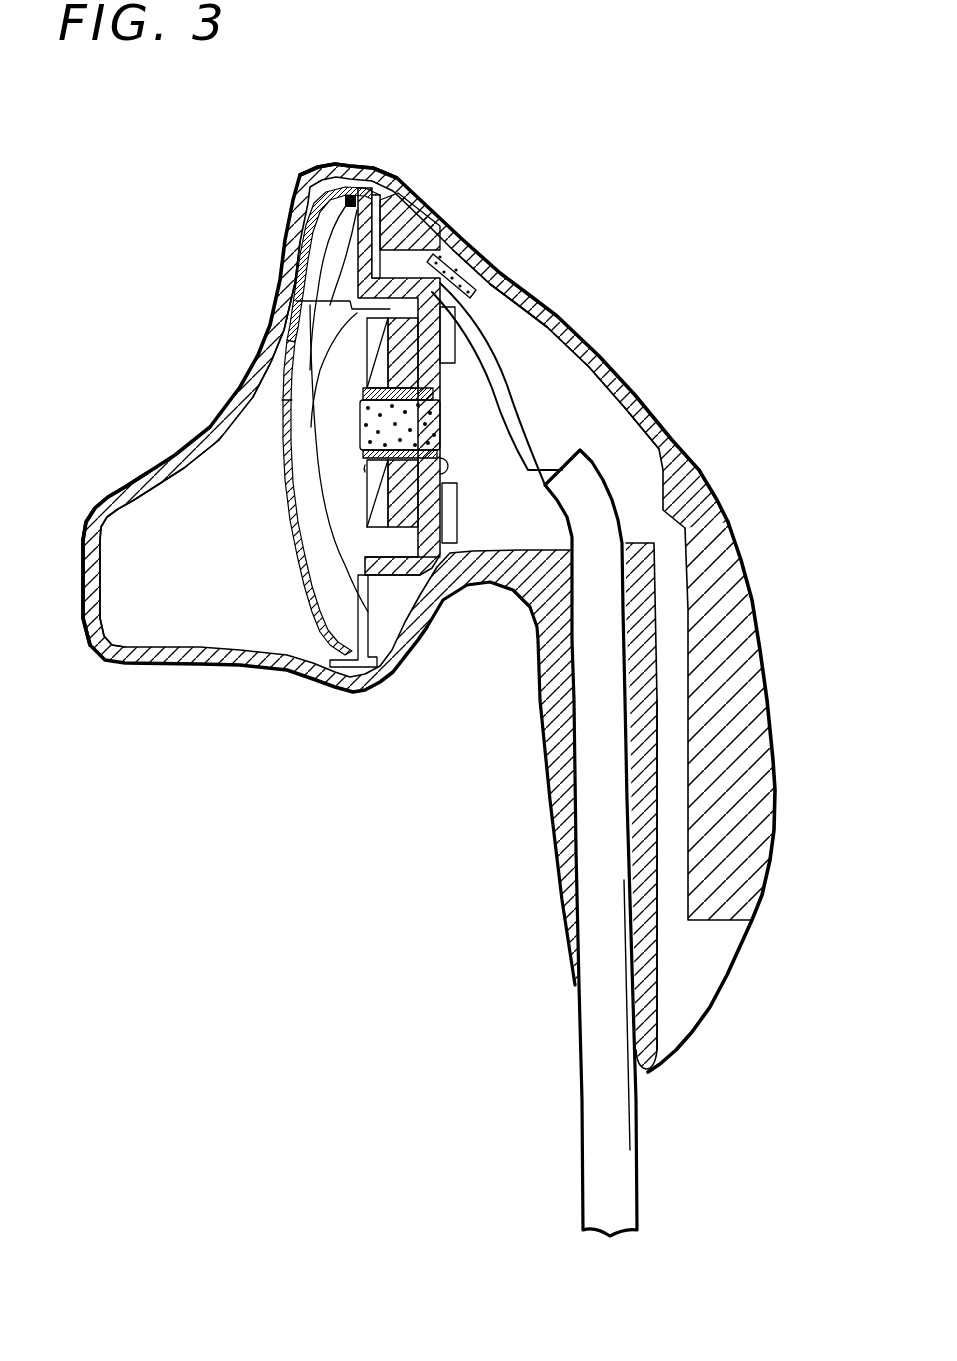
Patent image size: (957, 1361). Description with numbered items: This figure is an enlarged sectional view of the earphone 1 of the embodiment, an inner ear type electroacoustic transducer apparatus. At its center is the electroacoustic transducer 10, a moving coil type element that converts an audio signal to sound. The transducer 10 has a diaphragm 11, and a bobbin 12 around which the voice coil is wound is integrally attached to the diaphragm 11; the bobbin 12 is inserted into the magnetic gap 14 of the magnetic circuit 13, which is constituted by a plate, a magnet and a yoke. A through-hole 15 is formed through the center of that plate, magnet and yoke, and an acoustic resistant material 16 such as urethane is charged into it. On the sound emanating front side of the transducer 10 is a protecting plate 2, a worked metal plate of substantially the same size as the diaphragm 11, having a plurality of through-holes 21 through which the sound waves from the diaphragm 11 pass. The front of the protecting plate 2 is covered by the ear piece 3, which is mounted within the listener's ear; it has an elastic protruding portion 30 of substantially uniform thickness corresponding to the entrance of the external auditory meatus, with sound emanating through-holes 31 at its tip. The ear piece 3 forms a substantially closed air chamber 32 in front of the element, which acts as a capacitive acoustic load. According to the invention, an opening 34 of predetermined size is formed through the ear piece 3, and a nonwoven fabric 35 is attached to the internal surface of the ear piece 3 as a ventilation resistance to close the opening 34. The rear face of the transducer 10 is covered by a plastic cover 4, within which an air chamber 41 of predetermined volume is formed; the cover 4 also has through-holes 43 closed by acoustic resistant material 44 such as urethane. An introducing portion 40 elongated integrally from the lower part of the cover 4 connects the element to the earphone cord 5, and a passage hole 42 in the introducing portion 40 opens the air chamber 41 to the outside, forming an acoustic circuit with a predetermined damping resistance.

The earphone 1 is at (412, 153).
The protecting plate 2 is at (313, 542).
The ear piece 3 is at (116, 712).
The cover 4 is at (786, 529).
The earphone cord 5 is at (597, 1080).
The electroacoustic transducer 10 is at (460, 393).
The diaphragm 11 is at (315, 503).
The bobbin 12 is at (297, 338).
The magnetic circuit 13 is at (403, 350).
The magnetic gap 14 is at (400, 563).
The through-hole 15 is at (432, 424).
The acoustic resistant material 16 is at (443, 424).
The through-holes 21 is at (315, 597).
The protruding portion 30 is at (97, 507).
The sound emanating through-holes 31 is at (82, 572).
The air chamber 32 is at (170, 517).
The opening 34 is at (290, 244).
The nonwoven fabric 35 is at (270, 303).
The introducing portion 40 is at (730, 628).
The air chamber 41 is at (585, 427).
The passage hole 42 is at (663, 767).
The through-holes 43 is at (461, 263).
The acoustic resistant material 44 is at (520, 284).